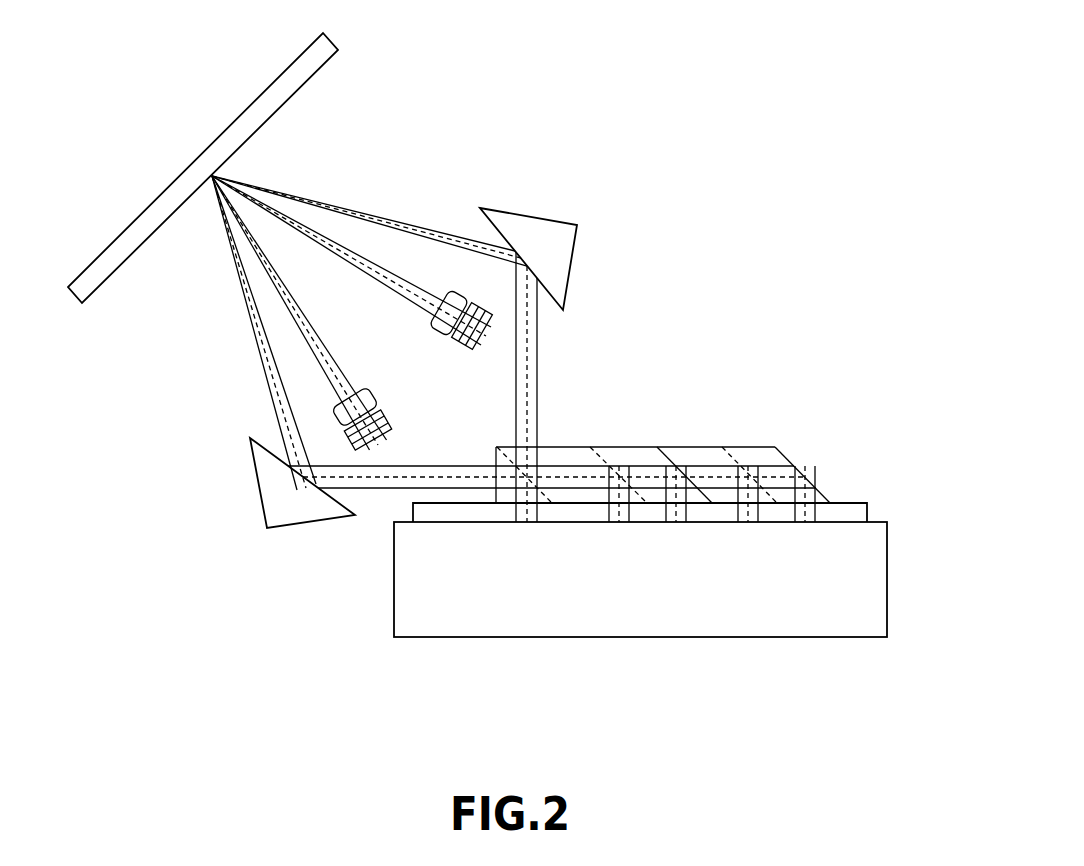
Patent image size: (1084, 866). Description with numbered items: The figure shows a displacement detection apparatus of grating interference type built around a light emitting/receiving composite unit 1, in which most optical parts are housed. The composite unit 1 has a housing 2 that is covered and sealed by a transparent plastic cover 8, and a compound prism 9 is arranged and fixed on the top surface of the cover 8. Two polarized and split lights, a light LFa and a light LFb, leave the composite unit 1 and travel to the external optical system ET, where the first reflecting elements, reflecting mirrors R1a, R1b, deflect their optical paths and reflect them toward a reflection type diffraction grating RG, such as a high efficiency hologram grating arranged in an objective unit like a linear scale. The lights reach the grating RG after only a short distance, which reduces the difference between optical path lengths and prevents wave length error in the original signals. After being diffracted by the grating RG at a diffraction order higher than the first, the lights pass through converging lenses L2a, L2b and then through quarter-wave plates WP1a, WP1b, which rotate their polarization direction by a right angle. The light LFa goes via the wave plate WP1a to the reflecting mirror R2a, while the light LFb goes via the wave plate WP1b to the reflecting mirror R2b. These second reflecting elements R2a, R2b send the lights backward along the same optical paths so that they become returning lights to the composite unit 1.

The reflection type diffraction grating RG is at (322, 71).
The reflecting mirror R1a is at (307, 527).
The reflecting mirror R1b is at (575, 268).
The converging lens L2a is at (338, 416).
The converging lens L2b is at (455, 293).
The λ/4 wave plate WP1a is at (396, 378).
The λ/4 wave plate WP1b is at (441, 335).
The reflecting mirror R2a is at (388, 440).
The reflecting mirror R2b is at (478, 348).
The light LFa is at (414, 467).
The light LFb is at (538, 381).
The compound prism 9 is at (710, 447).
The cover 8 is at (867, 512).
The housing 2 is at (887, 601).
The light emitting/receiving composite unit 1 is at (834, 386).
The external optical system ET is at (155, 429).